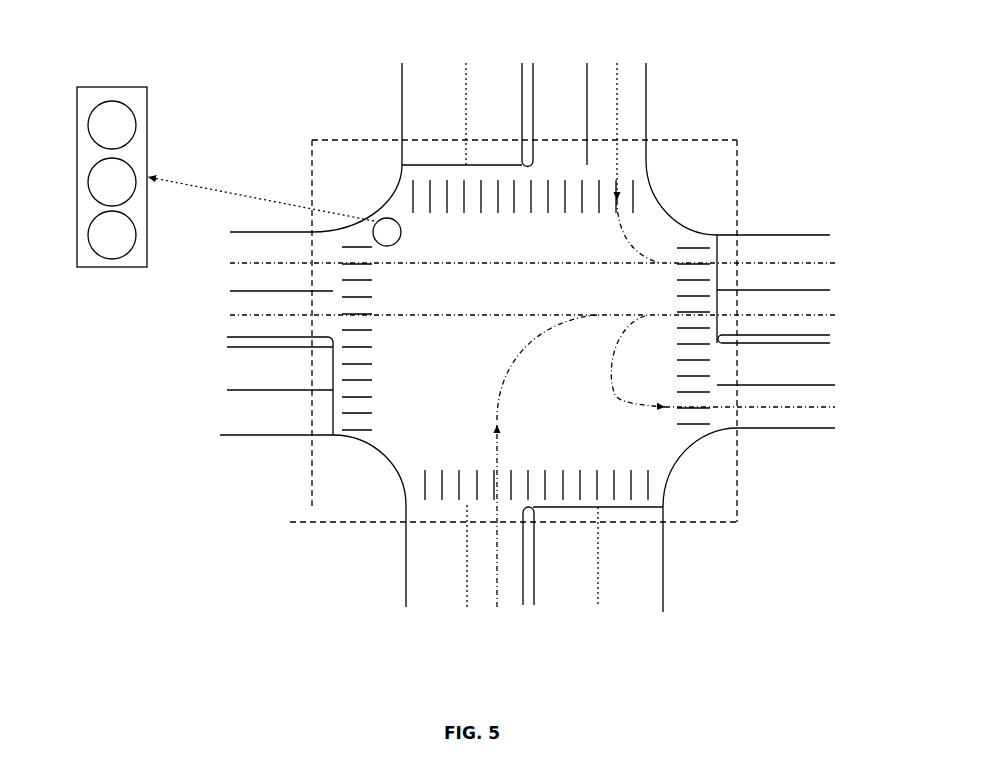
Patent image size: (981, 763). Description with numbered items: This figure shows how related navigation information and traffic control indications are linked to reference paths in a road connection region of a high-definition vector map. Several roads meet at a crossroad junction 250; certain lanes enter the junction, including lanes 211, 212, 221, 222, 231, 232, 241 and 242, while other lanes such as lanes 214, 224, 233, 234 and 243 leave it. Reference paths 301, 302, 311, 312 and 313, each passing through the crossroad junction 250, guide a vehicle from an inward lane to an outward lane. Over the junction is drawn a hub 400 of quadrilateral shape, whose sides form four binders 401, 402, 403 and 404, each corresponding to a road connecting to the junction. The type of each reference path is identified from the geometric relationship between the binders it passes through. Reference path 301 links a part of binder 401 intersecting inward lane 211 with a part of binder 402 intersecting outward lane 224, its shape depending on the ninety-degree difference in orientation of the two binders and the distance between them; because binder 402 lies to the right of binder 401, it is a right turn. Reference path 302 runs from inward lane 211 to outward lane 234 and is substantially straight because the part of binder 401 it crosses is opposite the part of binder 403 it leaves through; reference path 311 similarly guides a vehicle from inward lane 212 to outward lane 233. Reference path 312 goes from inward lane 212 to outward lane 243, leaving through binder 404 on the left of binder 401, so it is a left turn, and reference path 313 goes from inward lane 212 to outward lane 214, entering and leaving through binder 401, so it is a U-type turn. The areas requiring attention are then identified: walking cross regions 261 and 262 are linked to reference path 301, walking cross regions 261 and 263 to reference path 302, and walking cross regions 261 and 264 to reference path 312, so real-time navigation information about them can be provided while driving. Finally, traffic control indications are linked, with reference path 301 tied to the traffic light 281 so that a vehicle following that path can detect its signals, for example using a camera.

The traffic light 281 is at (217, 177).
The hub 400 is at (529, 332).
The binder 401 is at (738, 205).
The binder 402 is at (675, 140).
The binder 403 is at (302, 164).
The binder 404 is at (370, 527).
The lane 221 is at (462, 114).
The lane 222 is at (507, 115).
The outward lane 224 is at (636, 118).
The inward lane 211 is at (795, 253).
The inward lane 212 is at (797, 305).
The outward lane 214 is at (800, 425).
The lane 231 is at (276, 412).
The lane 232 is at (280, 386).
The outward lane 233 is at (246, 325).
The outward lane 234 is at (292, 248).
The lane 241 is at (621, 556).
The lane 242 is at (593, 556).
The outward lane 243 is at (483, 583).
The crossroad junction 250 is at (526, 340).
The walking cross region 261 is at (710, 440).
The walking cross region 262 is at (642, 188).
The walking cross region 263 is at (358, 437).
The walking cross region 264 is at (665, 485).
The reference path 301 is at (640, 232).
The reference path 302 is at (455, 260).
The reference path 311 is at (455, 314).
The reference path 312 is at (508, 370).
The reference path 313 is at (618, 398).